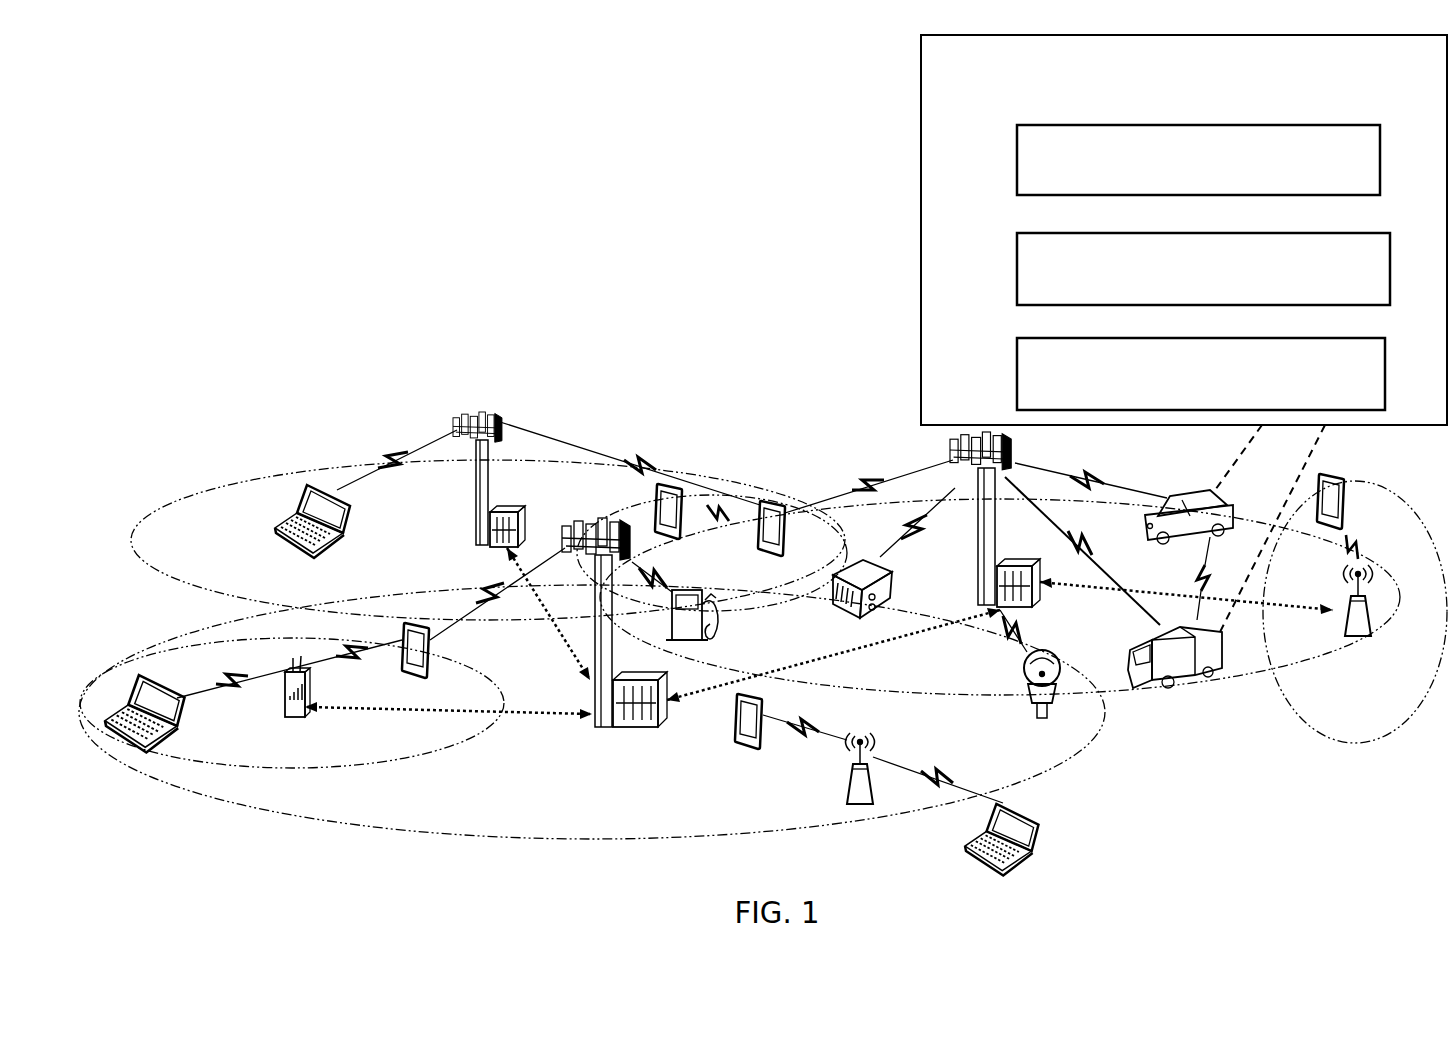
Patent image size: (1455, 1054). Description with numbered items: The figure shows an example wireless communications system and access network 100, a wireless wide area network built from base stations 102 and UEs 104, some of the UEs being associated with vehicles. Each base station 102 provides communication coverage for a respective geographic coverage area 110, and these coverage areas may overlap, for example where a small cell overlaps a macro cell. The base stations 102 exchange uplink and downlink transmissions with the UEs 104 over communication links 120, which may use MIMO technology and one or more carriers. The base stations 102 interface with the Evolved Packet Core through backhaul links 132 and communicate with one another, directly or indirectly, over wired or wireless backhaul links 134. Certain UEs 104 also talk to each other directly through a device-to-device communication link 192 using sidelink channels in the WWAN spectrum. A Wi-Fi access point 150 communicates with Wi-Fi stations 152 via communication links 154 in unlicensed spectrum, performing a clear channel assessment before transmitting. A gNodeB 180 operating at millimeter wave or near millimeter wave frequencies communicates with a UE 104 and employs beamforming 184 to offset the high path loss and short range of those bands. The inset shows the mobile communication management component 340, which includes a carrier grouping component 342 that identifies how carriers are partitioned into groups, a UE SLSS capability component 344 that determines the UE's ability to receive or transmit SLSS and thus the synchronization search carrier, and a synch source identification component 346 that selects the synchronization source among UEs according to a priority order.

The wireless communications system and access network 100 is at (156, 80).
The base station 102 is at (476, 520).
The UE 104 is at (332, 553).
The geographic coverage area 110 is at (187, 592).
The communication link 120 is at (392, 455).
The backhaul link 132 is at (516, 494).
The backhaul link 134 is at (402, 713).
The Wi-Fi access point 150 is at (858, 808).
The Wi-Fi station 152 is at (737, 727).
The communication link 154 is at (808, 721).
The gNodeB 180 is at (1377, 622).
The beamforming 184 is at (1362, 552).
The device-to-device communication link 192 is at (731, 527).
The mobile communication management component 340 is at (1184, 230).
The carrier grouping component 342 is at (1016, 148).
The UE SLSS capability component 344 is at (1016, 268).
The synch source identification component 346 is at (1016, 373).